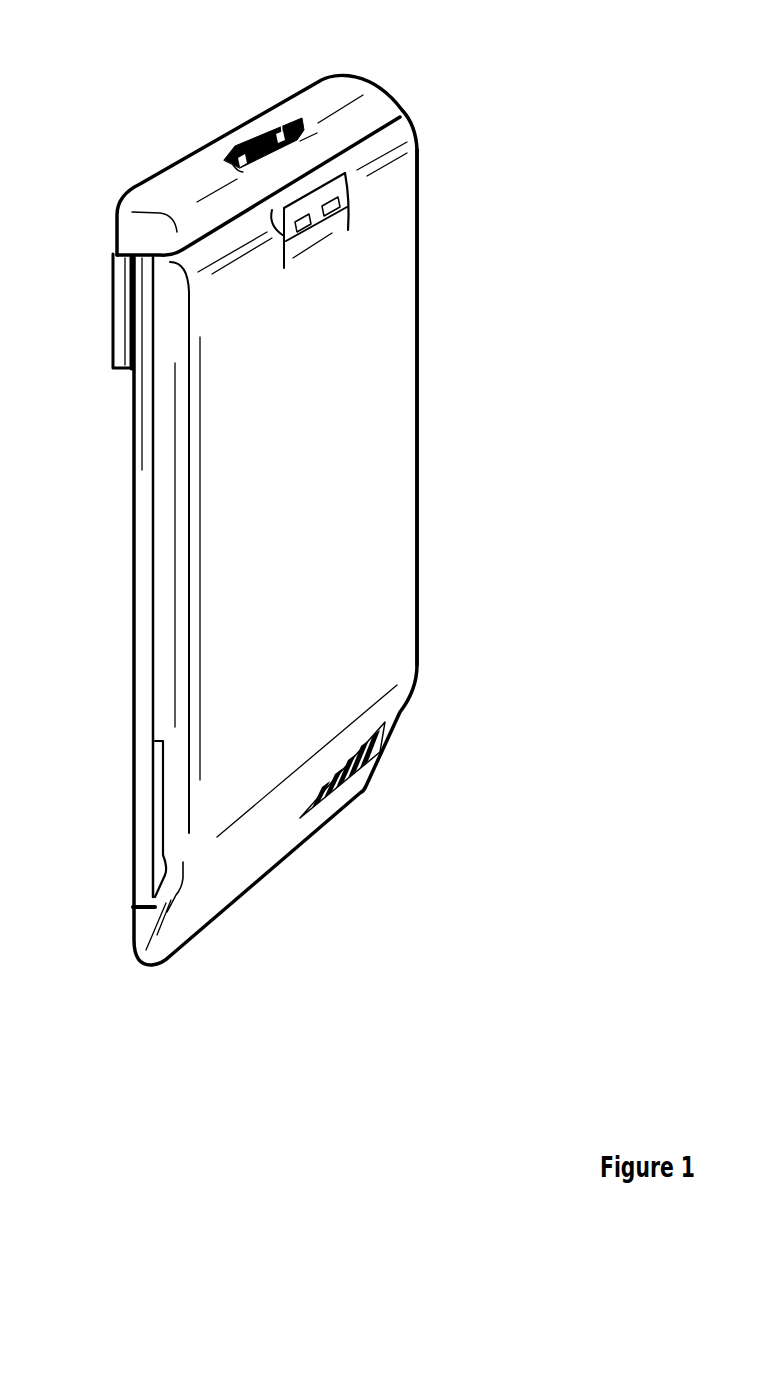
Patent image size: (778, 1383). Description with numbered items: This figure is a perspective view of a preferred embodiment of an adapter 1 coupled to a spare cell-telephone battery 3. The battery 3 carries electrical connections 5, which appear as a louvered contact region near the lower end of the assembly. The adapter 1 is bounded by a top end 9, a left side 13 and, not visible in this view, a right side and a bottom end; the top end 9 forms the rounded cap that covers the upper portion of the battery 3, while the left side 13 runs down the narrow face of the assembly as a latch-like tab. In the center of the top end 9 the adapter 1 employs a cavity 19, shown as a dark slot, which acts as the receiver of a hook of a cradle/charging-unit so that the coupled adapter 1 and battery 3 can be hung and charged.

The adapter 1 is at (371, 74).
The spare cell-telephone battery 3 is at (418, 406).
The electrical connections 5 is at (405, 729).
The top end 9 is at (184, 217).
The left side 13 is at (113, 334).
The cavity 19 is at (257, 131).